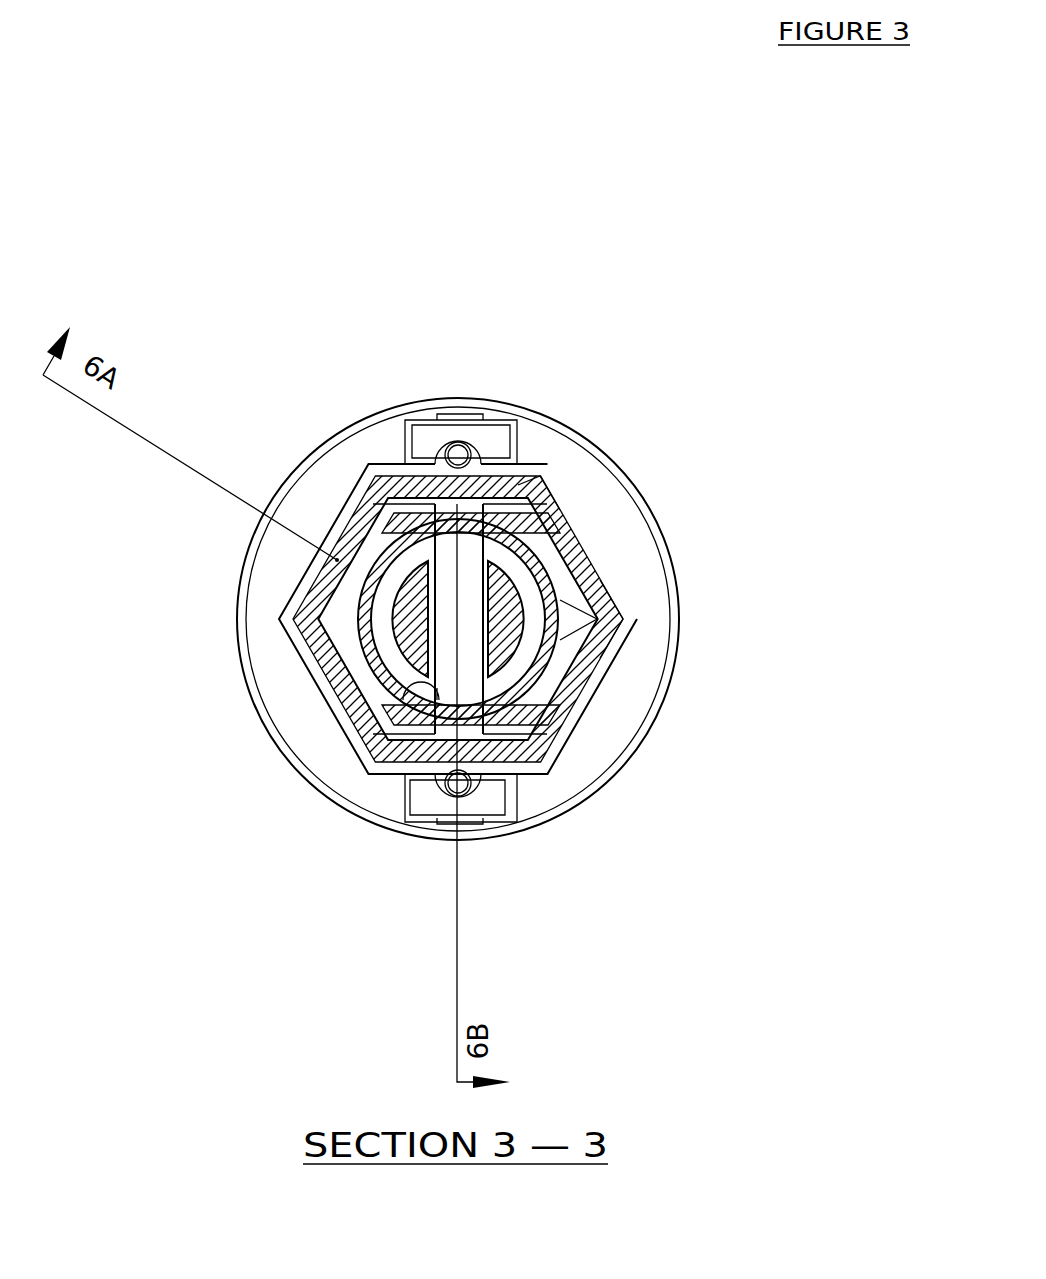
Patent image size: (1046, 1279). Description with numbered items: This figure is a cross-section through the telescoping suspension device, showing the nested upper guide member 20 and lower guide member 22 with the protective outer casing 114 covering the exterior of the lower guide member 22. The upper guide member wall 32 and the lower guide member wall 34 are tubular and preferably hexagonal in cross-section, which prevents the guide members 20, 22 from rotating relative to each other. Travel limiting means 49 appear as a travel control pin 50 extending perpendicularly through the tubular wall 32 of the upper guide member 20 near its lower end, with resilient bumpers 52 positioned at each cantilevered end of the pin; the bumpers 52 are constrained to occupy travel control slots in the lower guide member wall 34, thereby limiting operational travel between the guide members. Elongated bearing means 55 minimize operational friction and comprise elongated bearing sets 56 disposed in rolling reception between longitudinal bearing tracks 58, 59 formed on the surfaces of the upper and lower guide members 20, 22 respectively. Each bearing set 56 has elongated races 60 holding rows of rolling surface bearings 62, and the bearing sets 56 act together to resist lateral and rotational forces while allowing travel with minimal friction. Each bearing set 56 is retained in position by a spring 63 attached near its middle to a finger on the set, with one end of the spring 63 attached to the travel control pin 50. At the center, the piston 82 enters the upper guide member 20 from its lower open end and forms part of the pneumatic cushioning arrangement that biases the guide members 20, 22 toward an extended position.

The upper guide member 20 is at (405, 685).
The lower guide member 22 is at (657, 525).
The upper guide member wall 32 is at (535, 648).
The lower guide member wall 34 is at (613, 767).
The travel limiting means 49 is at (430, 818).
The travel control pin 50 is at (458, 418).
The resilient bumpers 52 is at (497, 422).
The elongated bearing means 55 is at (537, 773).
The elongated bearing sets 56 is at (383, 490).
The longitudinal bearing tracks 58 is at (552, 503).
The longitudinal bearing tracks 59 is at (633, 627).
The elongated races 60 is at (380, 493).
The rolling surface bearings 62 is at (455, 616).
The spring 63 is at (445, 442).
The piston 82 is at (393, 605).
The protective outer casing 114 is at (583, 433).